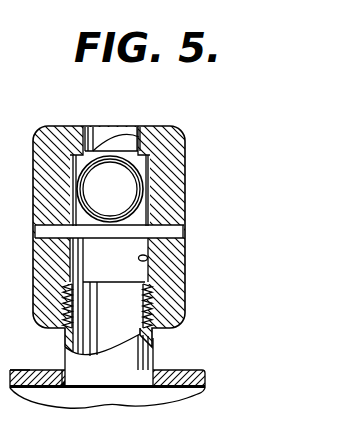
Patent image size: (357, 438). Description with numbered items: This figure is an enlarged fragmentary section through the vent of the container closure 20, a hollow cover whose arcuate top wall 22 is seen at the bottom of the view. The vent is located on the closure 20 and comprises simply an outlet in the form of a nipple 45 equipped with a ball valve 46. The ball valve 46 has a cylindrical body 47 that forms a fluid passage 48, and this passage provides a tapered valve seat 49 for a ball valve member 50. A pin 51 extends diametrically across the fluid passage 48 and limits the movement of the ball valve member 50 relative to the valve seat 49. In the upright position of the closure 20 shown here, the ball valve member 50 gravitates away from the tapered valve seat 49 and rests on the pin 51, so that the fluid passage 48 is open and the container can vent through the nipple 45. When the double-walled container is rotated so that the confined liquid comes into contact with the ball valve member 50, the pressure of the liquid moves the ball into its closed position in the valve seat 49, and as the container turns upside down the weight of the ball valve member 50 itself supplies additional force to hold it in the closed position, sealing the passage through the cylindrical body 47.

The closure 20 is at (198, 368).
The arcuate top wall 22 is at (43, 370).
The nipple 45 is at (153, 357).
The ball valve 46 is at (188, 195).
The cylindrical body 47 is at (163, 280).
The fluid passage 48 is at (147, 259).
The tapered valve seat 49 is at (141, 156).
The ball valve member 50 is at (132, 183).
The pin 51 is at (108, 234).